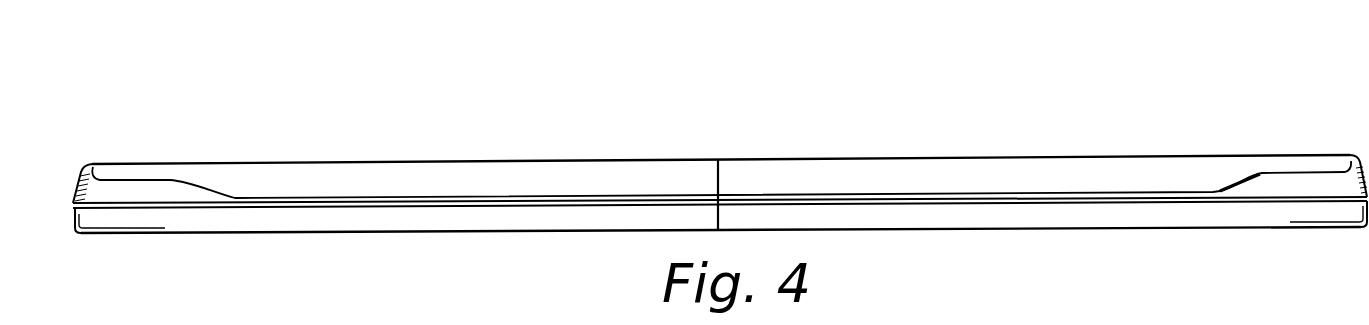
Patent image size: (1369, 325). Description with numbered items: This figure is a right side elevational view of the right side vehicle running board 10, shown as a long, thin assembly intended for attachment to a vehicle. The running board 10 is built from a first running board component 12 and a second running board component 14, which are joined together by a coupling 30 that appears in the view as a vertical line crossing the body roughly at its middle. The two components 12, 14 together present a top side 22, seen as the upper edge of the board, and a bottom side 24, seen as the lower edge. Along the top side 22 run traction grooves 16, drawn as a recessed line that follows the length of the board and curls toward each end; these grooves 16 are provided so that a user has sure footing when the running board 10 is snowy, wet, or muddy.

The vehicle running board 10 is at (586, 113).
The first running board component 12 is at (1164, 228).
The second running board component 14 is at (502, 233).
The traction grooves 16 is at (312, 203).
The top side 22 is at (405, 162).
The bottom side 24 is at (623, 233).
The coupling 30 is at (718, 158).